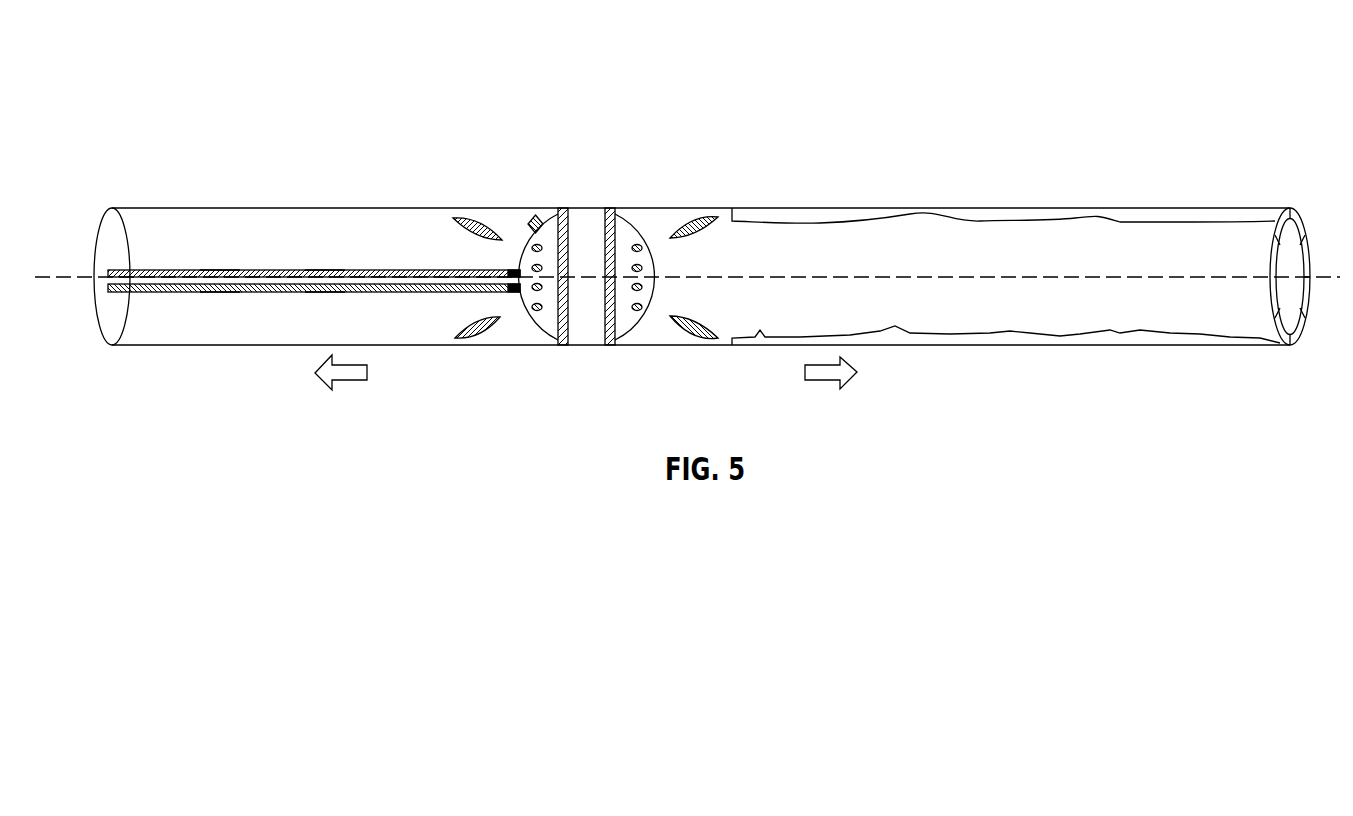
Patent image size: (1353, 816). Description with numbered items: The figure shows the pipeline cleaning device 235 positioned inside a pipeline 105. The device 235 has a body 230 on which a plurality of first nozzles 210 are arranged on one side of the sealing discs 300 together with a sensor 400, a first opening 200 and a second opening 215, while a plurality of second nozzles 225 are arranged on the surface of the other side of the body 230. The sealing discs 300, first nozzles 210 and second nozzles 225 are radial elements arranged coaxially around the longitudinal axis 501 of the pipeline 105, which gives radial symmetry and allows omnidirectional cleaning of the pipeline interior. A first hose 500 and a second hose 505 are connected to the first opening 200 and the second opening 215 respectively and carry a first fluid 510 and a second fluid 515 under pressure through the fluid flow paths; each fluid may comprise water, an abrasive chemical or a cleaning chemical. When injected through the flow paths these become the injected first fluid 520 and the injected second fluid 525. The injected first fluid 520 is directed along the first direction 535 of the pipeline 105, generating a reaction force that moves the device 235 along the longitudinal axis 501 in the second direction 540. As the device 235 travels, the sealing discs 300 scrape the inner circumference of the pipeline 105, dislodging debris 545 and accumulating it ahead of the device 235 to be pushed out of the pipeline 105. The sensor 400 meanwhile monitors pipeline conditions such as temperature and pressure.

The pipeline 105 is at (253, 221).
The first opening 200 is at (503, 292).
The plurality of first nozzles 210 is at (535, 247).
The second opening 215 is at (503, 270).
The plurality of second nozzles 225 is at (639, 247).
The body 230 is at (656, 277).
The device 235 is at (636, 124).
The sealing discs 300 is at (612, 208).
The sensor 400 is at (524, 205).
The first hose 500 is at (215, 292).
The longitudinal axis 501 is at (1150, 275).
The second hose 505 is at (217, 270).
The first fluid 510 is at (325, 292).
The second fluid 515 is at (325, 270).
The injected first fluid 520 is at (467, 210).
The injected second fluid 525 is at (702, 212).
The first direction 535 is at (343, 377).
The second direction 540 is at (827, 377).
The debris 545 is at (890, 316).